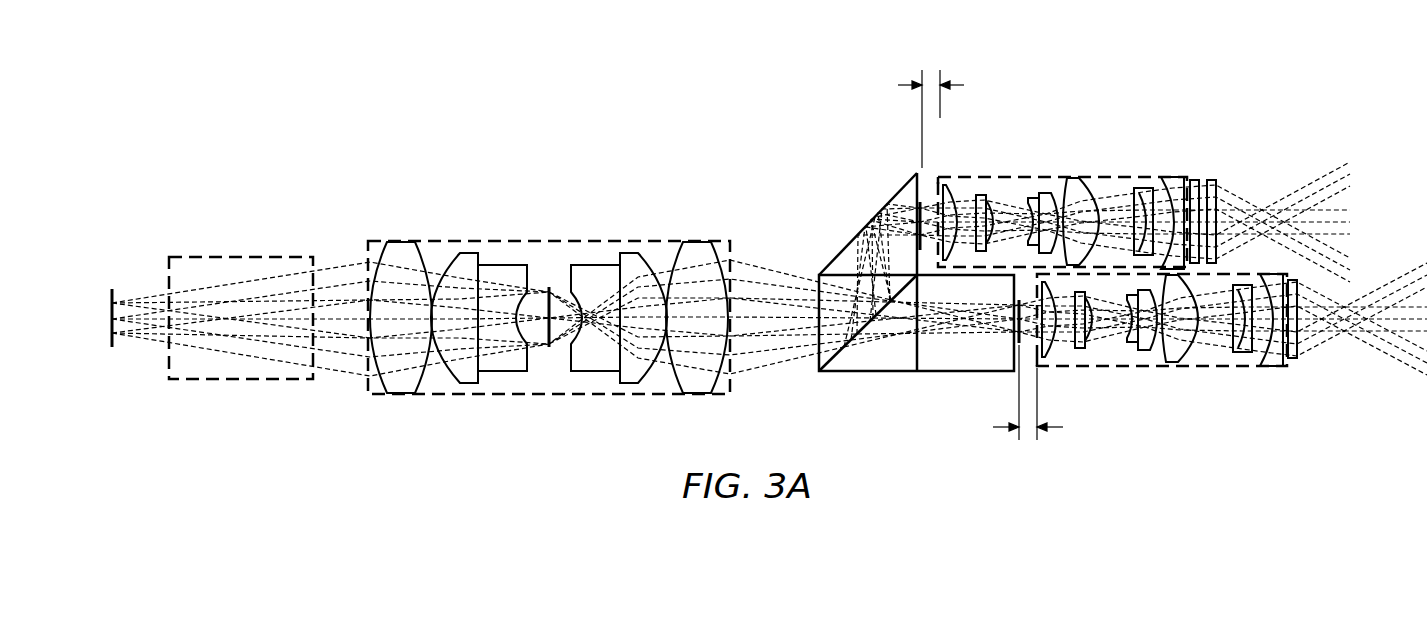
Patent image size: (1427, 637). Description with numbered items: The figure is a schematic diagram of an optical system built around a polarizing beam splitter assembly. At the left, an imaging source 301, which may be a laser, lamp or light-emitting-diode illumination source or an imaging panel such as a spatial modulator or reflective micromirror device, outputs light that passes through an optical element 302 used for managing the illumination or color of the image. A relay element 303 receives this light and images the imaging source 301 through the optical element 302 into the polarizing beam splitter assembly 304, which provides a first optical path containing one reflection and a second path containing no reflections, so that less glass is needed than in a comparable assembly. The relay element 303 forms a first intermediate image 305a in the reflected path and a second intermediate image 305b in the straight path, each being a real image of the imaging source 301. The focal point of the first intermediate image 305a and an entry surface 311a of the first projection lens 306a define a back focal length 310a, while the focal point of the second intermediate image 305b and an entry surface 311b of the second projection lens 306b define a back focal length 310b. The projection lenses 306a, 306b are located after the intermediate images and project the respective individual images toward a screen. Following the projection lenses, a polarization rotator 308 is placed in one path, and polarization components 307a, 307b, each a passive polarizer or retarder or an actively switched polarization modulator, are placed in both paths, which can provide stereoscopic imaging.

The imaging source 301 is at (113, 300).
The optical element 302 is at (229, 256).
The relay element 303 is at (512, 240).
The polarizing beam splitter assembly 304 is at (869, 372).
The first intermediate image 305a is at (920, 200).
The second intermediate image 305b is at (1020, 345).
The first projection lens 306a is at (1046, 171).
The second projection lens 306b is at (1195, 384).
The polarization component 307a is at (1215, 178).
The polarization component 307b is at (1297, 358).
The polarization rotator 308 is at (1196, 178).
The back focal length 310a is at (932, 80).
The back focal length 310b is at (1029, 436).
The entry surface 311a is at (937, 170).
The entry surface 311b is at (1036, 354).